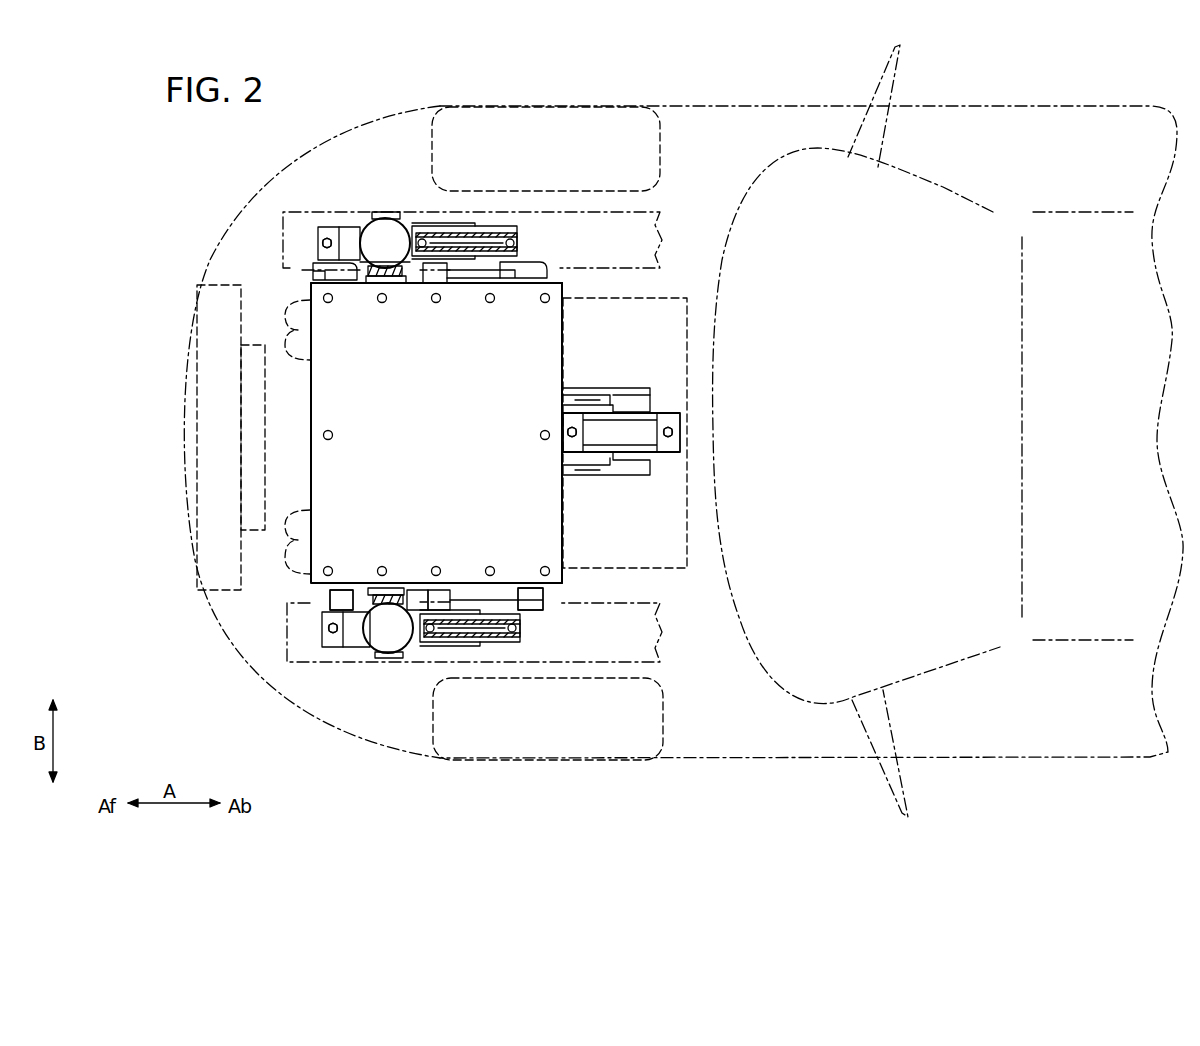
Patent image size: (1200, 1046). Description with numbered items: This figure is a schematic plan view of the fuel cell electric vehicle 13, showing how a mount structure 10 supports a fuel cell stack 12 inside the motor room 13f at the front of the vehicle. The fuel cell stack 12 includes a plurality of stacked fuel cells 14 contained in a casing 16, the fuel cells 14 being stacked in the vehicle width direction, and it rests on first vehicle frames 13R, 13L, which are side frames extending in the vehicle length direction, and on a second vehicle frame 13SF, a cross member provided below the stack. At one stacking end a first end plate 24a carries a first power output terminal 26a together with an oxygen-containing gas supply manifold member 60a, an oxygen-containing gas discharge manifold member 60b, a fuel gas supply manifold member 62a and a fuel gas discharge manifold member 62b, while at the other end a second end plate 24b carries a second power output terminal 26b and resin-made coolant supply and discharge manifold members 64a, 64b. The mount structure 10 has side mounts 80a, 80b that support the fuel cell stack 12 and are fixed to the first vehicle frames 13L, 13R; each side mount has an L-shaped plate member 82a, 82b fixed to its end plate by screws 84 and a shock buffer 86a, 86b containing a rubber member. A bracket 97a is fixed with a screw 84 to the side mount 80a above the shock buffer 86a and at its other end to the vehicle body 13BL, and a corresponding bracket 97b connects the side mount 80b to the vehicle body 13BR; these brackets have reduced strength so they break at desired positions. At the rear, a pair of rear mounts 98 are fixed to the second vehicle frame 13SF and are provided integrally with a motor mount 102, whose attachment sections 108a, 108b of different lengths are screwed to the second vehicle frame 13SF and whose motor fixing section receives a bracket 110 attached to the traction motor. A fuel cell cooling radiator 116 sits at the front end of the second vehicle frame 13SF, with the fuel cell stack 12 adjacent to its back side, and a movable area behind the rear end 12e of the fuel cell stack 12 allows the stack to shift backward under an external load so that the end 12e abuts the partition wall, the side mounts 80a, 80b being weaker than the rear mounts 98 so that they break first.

The mount structure 10 is at (664, 396).
The fuel cell stack 12 is at (308, 330).
The rear end of the fuel cell stack 12e is at (563, 552).
The fuel cell electric vehicle 13 is at (713, 102).
The motor room 13f is at (228, 246).
The first vehicle frame 13R is at (250, 222).
The first vehicle frame 13L is at (293, 640).
The vehicle body 13BR is at (517, 283).
The vehicle body 13BL is at (522, 605).
The second vehicle frame 13SF is at (688, 521).
The fuel cells 14 is at (538, 338).
The casing 16 is at (550, 323).
The first end plate 24a is at (488, 590).
The second end plate 24b is at (487, 280).
The first power output terminal 26a is at (445, 592).
The second power output terminal 26b is at (446, 286).
The oxygen-containing gas supply manifold member 60a is at (530, 592).
The oxygen-containing gas discharge manifold member 60b is at (341, 600).
The fuel gas supply manifold member 62a is at (530, 599).
The fuel gas discharge manifold member 62b is at (330, 605).
The coolant supply manifold member 64a is at (527, 282).
The coolant discharge manifold member 64b is at (320, 228).
The side mount 80a is at (365, 670).
The side mount 80b is at (369, 211).
The plate member 82a is at (396, 590).
The plate member 82b is at (394, 286).
The screws 84 is at (373, 289).
The shock buffer 86a is at (392, 640).
The shock buffer 86b is at (386, 240).
The bracket 97a is at (518, 628).
The bracket 97b is at (515, 243).
The rear mounts 98 is at (577, 404).
The motor mount 102 is at (633, 438).
The attachment section 108a is at (565, 428).
The attachment section 108b is at (672, 420).
The bracket 110 is at (623, 398).
The fuel cell cooling radiator 116 is at (210, 383).